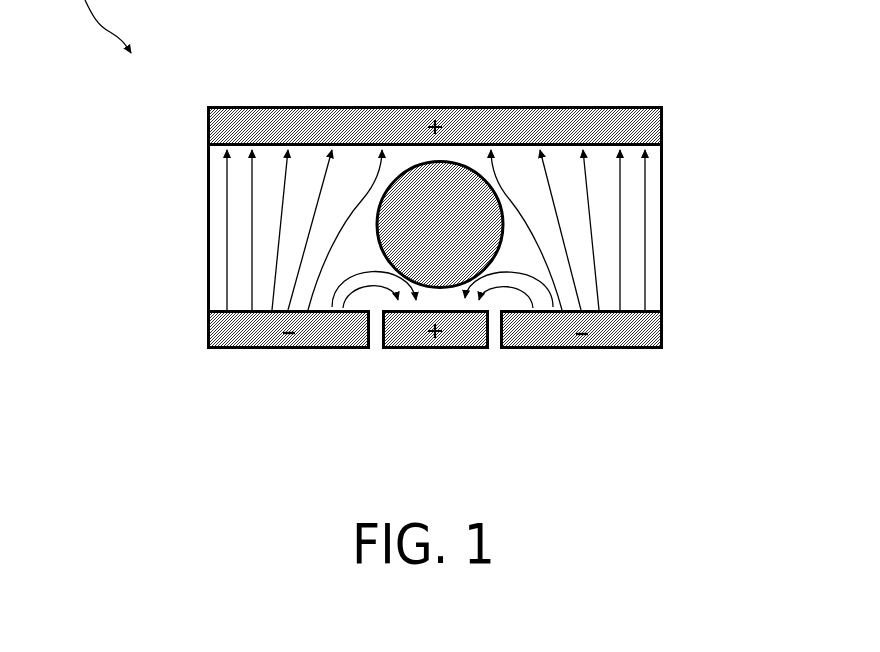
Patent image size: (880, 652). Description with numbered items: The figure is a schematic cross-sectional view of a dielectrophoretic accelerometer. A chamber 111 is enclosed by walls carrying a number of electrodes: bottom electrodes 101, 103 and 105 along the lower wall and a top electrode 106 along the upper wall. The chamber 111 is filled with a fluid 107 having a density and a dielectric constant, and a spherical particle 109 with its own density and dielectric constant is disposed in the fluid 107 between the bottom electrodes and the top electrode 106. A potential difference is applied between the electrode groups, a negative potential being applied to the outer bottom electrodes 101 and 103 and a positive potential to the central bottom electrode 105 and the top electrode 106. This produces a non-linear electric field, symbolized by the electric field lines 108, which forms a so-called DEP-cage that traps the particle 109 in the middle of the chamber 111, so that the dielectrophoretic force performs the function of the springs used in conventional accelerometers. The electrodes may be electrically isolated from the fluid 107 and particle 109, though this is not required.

The bottom electrode 101 is at (265, 337).
The bottom electrode 103 is at (565, 337).
The bottom electrode 105 is at (408, 337).
The top electrode 106 is at (408, 107).
The fluid 107 is at (308, 167).
The electric field lines 108 is at (620, 251).
The spherical particle 109 is at (465, 168).
The chamber 111 is at (218, 220).